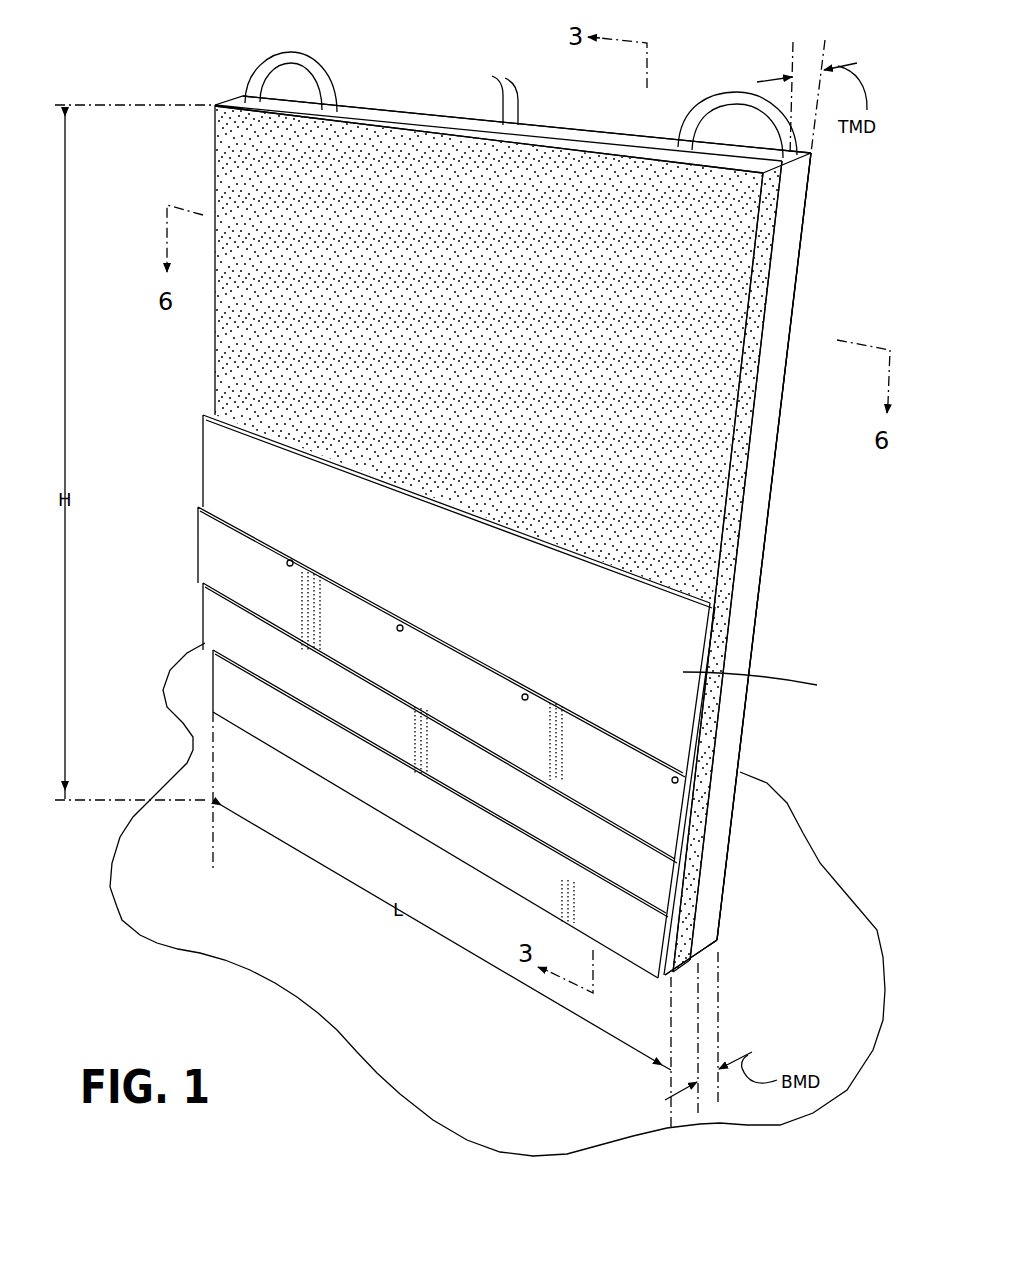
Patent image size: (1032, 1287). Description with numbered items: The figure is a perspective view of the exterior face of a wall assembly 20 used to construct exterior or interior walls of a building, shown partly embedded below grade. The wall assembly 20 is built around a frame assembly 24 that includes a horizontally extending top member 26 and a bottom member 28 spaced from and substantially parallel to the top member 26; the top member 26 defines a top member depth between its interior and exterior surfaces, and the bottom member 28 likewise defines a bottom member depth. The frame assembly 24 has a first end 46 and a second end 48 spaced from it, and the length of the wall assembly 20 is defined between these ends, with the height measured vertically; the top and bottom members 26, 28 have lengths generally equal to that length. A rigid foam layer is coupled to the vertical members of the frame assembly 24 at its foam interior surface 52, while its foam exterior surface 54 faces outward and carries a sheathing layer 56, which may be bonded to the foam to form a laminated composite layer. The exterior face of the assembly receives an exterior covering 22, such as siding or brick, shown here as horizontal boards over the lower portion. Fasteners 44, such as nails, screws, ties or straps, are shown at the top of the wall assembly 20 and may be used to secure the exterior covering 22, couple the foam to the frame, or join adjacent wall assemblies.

The wall assembly 20 is at (765, 62).
The exterior covering 22 is at (655, 873).
The frame assembly 24 is at (802, 360).
The top member 26 is at (568, 127).
The bottom member 28 is at (713, 938).
The fasteners 44 is at (521, 95).
The first end 46 is at (190, 608).
The second end 48 is at (768, 587).
The foam interior surface 52 is at (728, 355).
The foam exterior surface 54 is at (488, 355).
The sheathing layer 56 is at (763, 685).